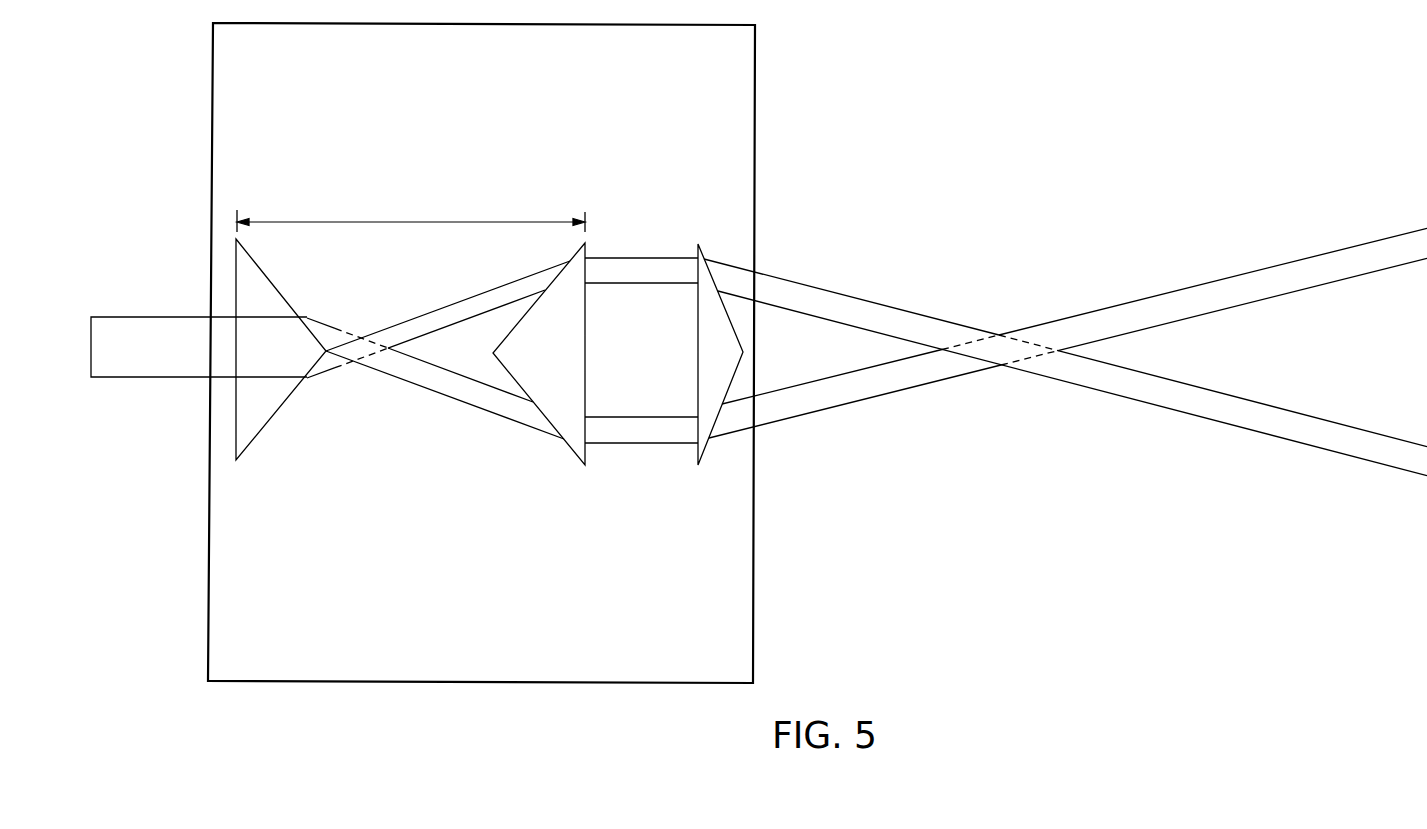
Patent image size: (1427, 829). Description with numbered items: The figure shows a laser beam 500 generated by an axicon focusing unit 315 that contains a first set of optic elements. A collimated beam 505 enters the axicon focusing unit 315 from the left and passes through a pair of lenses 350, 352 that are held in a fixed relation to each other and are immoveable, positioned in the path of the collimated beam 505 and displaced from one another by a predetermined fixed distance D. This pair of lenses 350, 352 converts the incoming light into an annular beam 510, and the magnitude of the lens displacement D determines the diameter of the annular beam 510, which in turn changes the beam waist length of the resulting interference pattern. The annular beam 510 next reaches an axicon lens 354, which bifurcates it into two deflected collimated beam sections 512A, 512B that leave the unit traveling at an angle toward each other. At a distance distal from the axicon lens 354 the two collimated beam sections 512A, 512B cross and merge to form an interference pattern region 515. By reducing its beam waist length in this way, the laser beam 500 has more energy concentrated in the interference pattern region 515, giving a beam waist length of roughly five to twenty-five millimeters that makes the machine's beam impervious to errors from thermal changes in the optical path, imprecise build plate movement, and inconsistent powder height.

The laser beam 500 is at (759, 353).
The axicon focusing unit 315 is at (757, 127).
The collimated beam 505 is at (161, 381).
The lens 350 is at (271, 435).
The lens 352 is at (564, 463).
The annular beam 510 is at (632, 247).
The axicon lens 354 is at (700, 242).
The deflected collimated beam section 512A is at (838, 417).
The deflected collimated beam section 512B is at (849, 287).
The interference pattern region 515 is at (1002, 377).